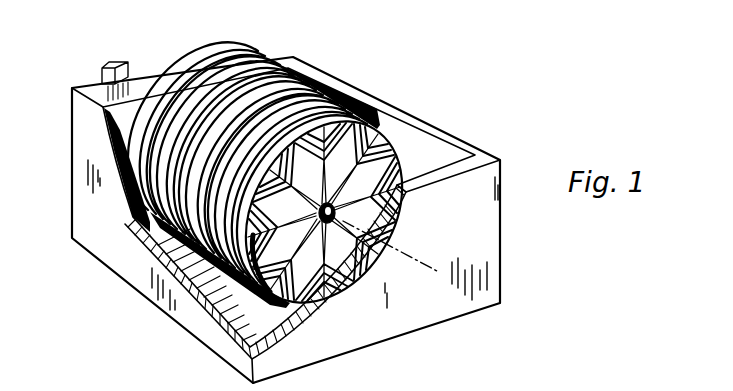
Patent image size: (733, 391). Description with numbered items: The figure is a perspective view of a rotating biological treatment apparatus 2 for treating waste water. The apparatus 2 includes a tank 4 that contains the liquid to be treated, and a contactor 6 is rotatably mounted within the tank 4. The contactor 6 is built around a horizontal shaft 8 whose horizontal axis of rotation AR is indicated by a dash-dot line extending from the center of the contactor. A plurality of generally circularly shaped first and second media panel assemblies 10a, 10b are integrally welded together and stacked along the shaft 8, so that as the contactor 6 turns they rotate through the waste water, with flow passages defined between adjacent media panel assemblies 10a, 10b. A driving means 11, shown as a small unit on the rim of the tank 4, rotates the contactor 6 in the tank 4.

The rotating biological treatment apparatus 2 is at (494, 59).
The tank 4 is at (322, 79).
The contactor 6 is at (225, 47).
The horizontal shaft 8 is at (345, 256).
The first media panel assembly 10a is at (378, 123).
The second media panel assembly 10b is at (350, 103).
The driving means 11 is at (117, 60).
The axis of rotation AR is at (393, 246).